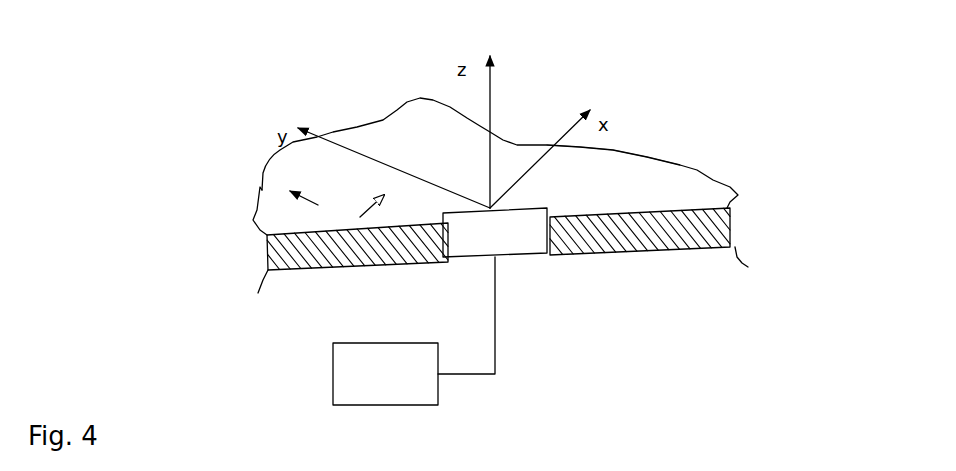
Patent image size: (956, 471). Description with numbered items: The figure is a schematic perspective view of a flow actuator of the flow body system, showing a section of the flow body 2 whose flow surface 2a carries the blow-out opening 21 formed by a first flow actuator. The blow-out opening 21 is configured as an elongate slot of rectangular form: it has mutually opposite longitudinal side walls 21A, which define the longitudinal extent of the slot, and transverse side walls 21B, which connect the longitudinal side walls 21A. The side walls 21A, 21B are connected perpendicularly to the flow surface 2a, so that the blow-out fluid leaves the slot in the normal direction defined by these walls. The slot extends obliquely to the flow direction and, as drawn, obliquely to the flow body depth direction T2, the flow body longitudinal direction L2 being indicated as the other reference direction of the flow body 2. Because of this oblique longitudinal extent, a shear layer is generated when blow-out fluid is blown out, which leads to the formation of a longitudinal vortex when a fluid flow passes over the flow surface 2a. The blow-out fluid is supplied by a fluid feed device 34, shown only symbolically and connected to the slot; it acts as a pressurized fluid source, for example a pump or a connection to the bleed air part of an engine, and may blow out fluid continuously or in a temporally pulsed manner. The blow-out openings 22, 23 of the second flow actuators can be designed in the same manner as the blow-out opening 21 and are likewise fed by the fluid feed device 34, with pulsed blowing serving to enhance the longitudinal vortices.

The flow body 2 is at (730, 226).
The flow surface 2a is at (663, 174).
The blow-out opening 21 is at (640, 262).
The blow-out opening 22 is at (640, 262).
The blow-out opening 23 is at (550, 270).
The longitudinal side walls 21A is at (507, 240).
The transverse side walls 21B is at (450, 246).
The fluid feed device 34 is at (414, 331).
The flow body longitudinal direction L2 is at (308, 200).
The flow body depth direction T2 is at (370, 208).